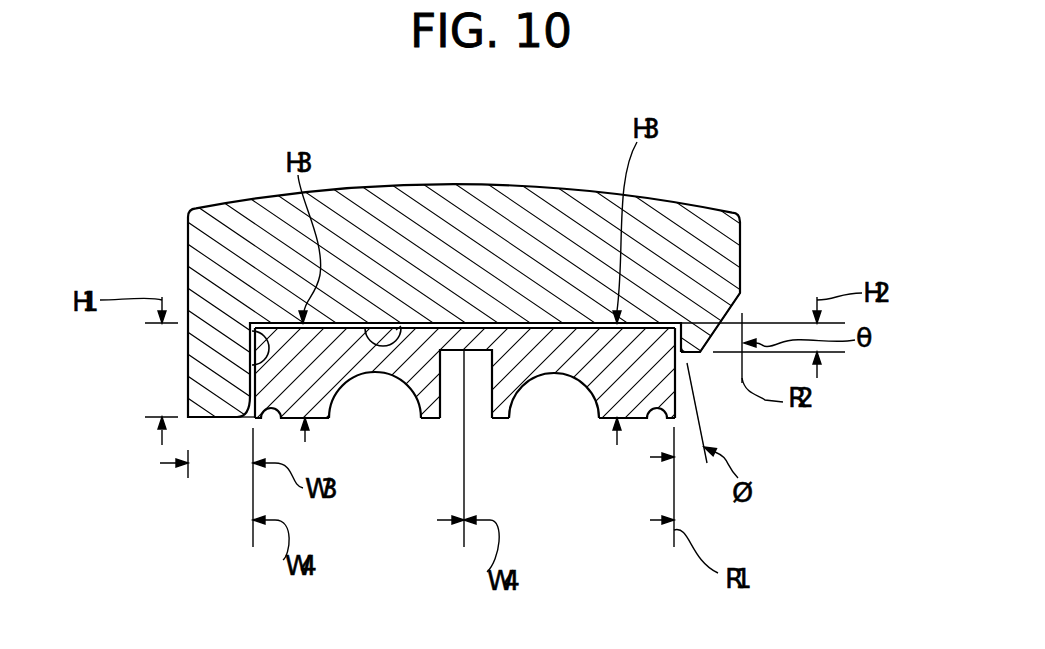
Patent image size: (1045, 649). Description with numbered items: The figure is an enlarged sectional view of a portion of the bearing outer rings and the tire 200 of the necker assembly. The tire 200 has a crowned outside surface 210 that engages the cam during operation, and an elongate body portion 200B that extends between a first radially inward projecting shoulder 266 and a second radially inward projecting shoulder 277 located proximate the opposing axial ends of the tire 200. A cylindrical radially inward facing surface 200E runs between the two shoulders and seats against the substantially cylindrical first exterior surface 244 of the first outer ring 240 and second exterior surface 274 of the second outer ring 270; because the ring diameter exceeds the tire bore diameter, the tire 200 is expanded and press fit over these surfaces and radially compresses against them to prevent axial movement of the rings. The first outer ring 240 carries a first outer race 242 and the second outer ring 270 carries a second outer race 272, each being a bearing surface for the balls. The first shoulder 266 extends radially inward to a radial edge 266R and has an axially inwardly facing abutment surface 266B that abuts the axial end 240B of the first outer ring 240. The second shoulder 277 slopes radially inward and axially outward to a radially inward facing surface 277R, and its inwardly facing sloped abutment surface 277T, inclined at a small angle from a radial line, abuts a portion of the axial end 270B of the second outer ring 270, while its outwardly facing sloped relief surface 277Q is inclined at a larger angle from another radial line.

The tire 200 is at (427, 324).
The outside surface 210 is at (708, 202).
The first outer ring 240 is at (277, 342).
The axial end of the first outer ring 240B is at (241, 418).
The first exterior surface 244 is at (337, 323).
The radially inward facing surface 200E is at (398, 332).
The elongate body portion 200B is at (465, 225).
The first radially inward projecting shoulder 266 is at (200, 387).
The axially inwardly facing abutment surface 266B is at (258, 334).
The radial edge 266R is at (215, 418).
The second outer ring 270 is at (461, 300).
The axial end of the second outer ring 270B is at (675, 398).
The second exterior surface 274 is at (548, 320).
The first outer race 242 is at (381, 377).
The second outer race 272 is at (542, 381).
The second radially inward projecting shoulder 277 is at (694, 333).
The outwardly facing sloped relief surface 277Q is at (712, 322).
The radially inward facing surface 277R is at (683, 353).
The inwardly facing sloped abutment surface 277T is at (670, 333).